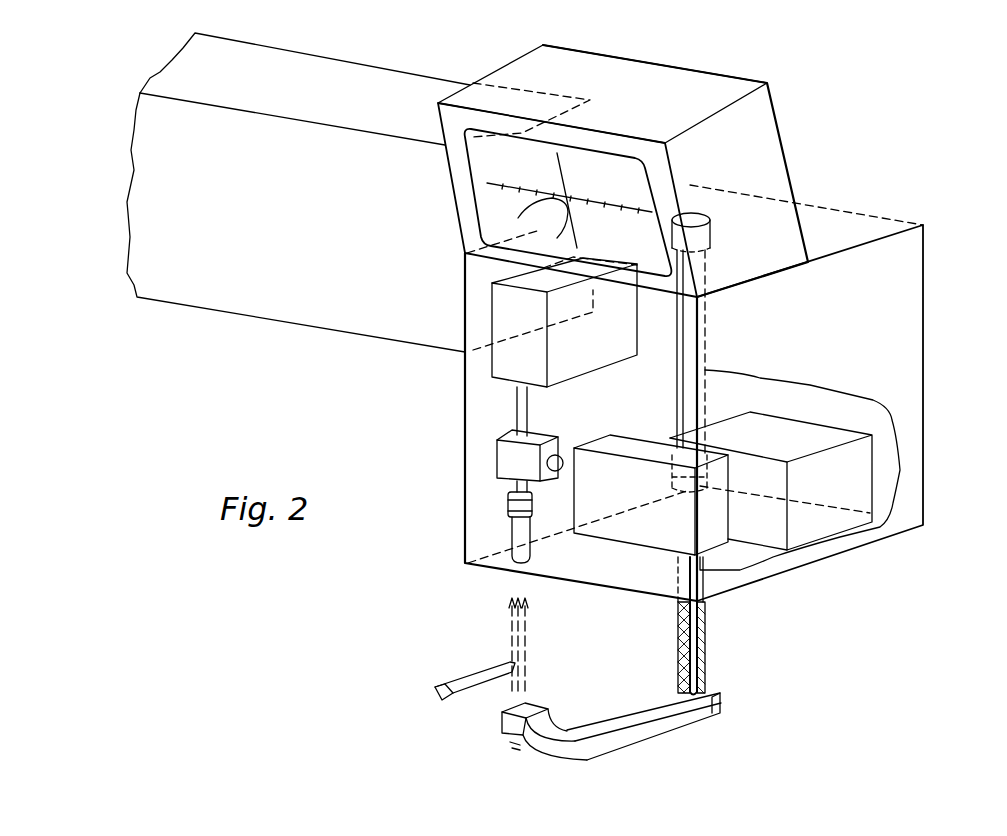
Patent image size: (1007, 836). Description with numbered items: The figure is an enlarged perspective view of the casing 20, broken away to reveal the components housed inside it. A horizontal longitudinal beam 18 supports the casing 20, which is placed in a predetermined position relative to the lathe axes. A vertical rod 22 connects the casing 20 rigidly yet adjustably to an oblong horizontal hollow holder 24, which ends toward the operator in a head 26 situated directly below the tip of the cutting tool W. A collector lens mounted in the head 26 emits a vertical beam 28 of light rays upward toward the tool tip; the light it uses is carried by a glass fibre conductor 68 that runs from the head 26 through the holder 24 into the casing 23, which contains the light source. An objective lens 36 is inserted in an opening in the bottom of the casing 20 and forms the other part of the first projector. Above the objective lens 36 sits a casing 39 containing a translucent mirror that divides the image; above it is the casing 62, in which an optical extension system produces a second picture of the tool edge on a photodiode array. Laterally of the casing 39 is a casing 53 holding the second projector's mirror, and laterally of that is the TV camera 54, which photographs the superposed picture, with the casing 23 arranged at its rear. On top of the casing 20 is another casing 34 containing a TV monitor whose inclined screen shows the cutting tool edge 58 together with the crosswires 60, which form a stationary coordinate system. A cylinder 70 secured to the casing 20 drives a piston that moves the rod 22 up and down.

The horizontal longitudinal beam 18 is at (263, 303).
The casing 20 is at (912, 337).
The vertical rod 22 is at (688, 668).
The casing 23 is at (788, 432).
The oblong horizontal hollow holder 24 is at (652, 727).
The head 26 is at (503, 735).
The vertical beam of light rays 28 is at (520, 627).
The casing 34 is at (695, 74).
The objective lens 36 is at (485, 209).
The casing 39 is at (497, 436).
The casing 53 is at (572, 488).
The TV camera 54 is at (630, 446).
The cutting tool edge 58 is at (524, 212).
The crosswires 60 is at (558, 163).
The casing 62 is at (628, 320).
The light-carrying conductor 68 is at (705, 620).
The cylinder 70 is at (677, 393).
The cutting tool W is at (455, 677).